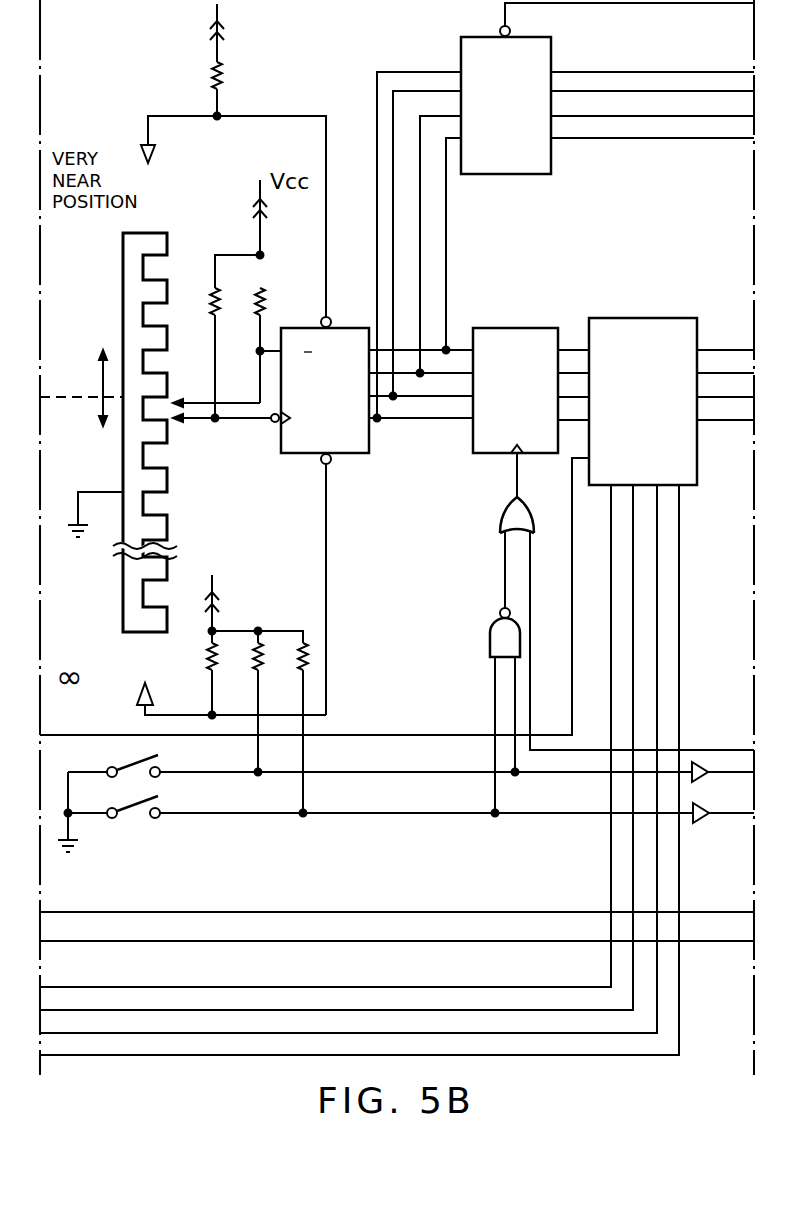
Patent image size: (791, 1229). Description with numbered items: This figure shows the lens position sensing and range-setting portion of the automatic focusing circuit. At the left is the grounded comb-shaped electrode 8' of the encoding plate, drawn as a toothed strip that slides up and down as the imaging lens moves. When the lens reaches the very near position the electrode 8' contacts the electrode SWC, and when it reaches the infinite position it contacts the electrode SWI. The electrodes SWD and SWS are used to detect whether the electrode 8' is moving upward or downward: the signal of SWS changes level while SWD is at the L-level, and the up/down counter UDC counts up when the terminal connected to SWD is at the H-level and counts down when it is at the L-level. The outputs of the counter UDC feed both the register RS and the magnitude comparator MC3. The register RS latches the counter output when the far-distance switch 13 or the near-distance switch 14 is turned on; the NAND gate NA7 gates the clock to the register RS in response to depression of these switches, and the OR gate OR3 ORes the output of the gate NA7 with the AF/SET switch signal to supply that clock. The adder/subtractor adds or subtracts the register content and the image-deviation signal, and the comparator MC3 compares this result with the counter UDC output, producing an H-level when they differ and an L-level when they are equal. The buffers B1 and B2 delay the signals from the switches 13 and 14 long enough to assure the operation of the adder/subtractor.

The comb-shaped electrode 8' is at (121, 432).
The photographing distance range setting switch for far distance 13 is at (138, 770).
The photographing distance range setting switch for near distance 14 is at (136, 813).
The electrode SWC is at (157, 152).
The electrode SWD is at (193, 407).
The electrode SWS is at (203, 424).
The electrode SWI is at (147, 684).
The up/down counter UDC is at (355, 454).
The magnitude comparator MC3 is at (515, 175).
The register RS is at (510, 328).
The OR gate OR3 is at (500, 523).
The NAND gate NA7 is at (490, 643).
The buffer B1 is at (702, 783).
The buffer B2 is at (702, 824).